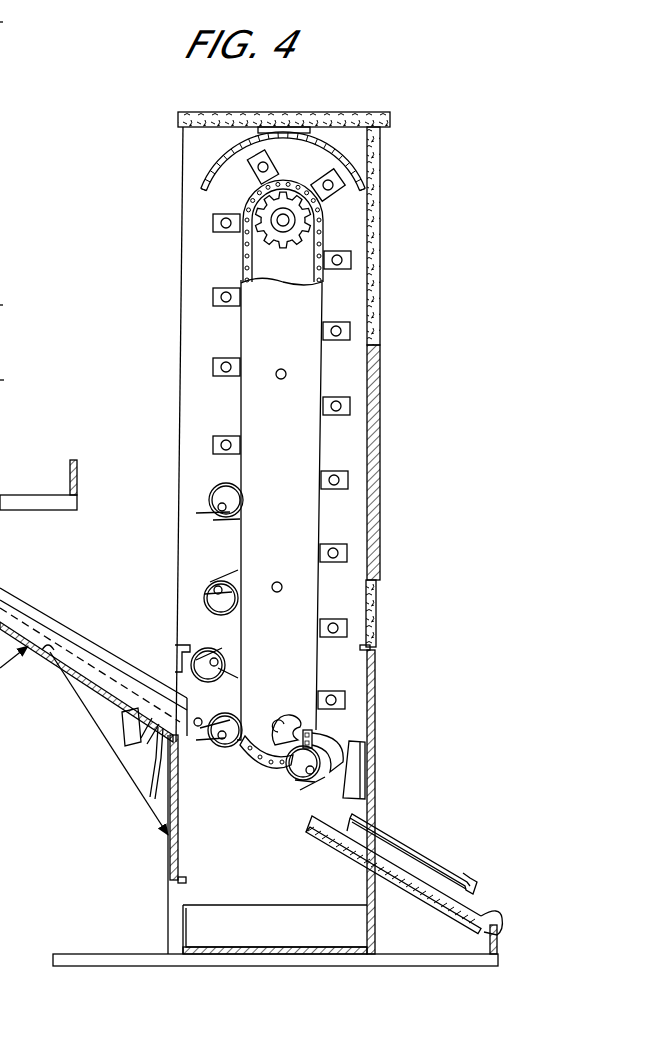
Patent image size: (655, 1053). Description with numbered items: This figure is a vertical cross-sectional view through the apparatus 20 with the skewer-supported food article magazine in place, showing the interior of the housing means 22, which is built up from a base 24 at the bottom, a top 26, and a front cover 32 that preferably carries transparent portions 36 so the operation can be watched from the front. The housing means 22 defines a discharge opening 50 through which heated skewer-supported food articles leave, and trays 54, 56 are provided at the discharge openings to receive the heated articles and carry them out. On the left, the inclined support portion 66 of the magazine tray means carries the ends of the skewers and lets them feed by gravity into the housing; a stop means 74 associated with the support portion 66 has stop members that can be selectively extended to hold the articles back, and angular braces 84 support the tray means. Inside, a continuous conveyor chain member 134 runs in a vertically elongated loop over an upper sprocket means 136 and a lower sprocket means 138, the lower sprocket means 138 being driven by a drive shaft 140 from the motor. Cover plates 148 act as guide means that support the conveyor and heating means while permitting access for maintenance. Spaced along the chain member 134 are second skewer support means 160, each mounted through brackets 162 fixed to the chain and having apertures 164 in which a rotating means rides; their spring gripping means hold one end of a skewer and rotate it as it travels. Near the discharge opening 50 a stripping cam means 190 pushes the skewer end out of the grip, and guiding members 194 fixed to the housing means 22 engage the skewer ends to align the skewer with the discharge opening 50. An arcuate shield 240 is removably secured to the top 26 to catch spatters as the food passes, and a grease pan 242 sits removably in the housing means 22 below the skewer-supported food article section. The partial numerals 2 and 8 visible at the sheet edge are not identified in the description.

The apparatus 20 is at (394, 161).
The housing means 22 is at (379, 598).
The base 24 is at (16, 496).
The top 26 is at (236, 113).
The front cover 32 is at (381, 284).
The transparent portions 36 is at (381, 455).
The discharge opening 50 is at (373, 818).
The tray 54 is at (421, 852).
The tray 56 is at (11, 367).
The support portion 66 is at (24, 615).
The stop means 74 is at (119, 757).
The angular braces 84 is at (83, 706).
The conveyor chain member 134 is at (324, 236).
The upper sprocket means 136 is at (301, 220).
The lower sprocket means 138 is at (272, 760).
The drive shaft 140 is at (273, 729).
The cover plates 148 is at (293, 395).
The second skewer support means 160 is at (214, 531).
The brackets 162 is at (224, 436).
The apertures 164 is at (224, 288).
The stripping cam means 190 is at (334, 733).
The guiding members 194 is at (358, 771).
The arcuate shield 240 is at (205, 176).
The grease pan 242 is at (183, 927).
The apparatus 2 is at (4, 303).
The housing 8 is at (8, 20).